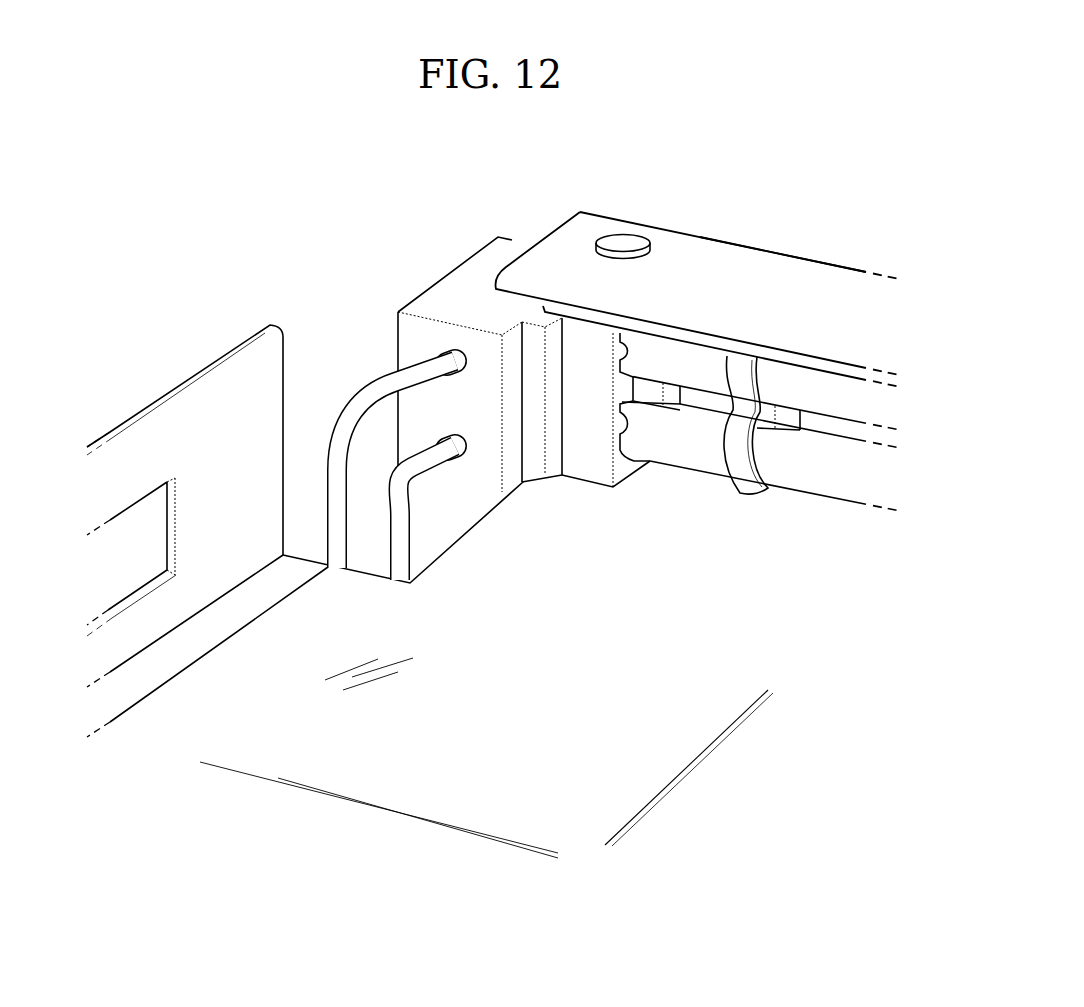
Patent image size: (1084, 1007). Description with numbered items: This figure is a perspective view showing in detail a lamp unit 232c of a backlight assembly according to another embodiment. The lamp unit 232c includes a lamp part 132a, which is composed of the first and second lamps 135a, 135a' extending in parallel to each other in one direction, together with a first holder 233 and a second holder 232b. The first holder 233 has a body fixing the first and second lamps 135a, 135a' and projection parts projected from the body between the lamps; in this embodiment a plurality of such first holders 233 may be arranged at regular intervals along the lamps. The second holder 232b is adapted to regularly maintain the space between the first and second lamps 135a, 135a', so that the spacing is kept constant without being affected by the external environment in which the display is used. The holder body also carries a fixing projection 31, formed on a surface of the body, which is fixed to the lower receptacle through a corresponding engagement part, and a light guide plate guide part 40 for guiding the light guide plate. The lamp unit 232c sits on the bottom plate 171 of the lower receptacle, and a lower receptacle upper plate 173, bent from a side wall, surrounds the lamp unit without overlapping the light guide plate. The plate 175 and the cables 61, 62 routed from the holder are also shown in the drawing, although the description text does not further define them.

The fixing projection 31 is at (622, 247).
The light guide plate guide part 40 is at (537, 345).
The first cable 61 is at (350, 413).
The second cable 62 is at (412, 460).
The bottom plate 171 is at (633, 767).
The lower receptacle upper plate 173 is at (723, 257).
The cover plate 175 is at (664, 265).
The second holder 232b is at (488, 450).
The lamp unit 232c is at (701, 485).
The first holder 233 is at (725, 486).
The first lamp 135a is at (723, 476).
The second lamp 135a' is at (822, 490).
The lamp part 132a is at (760, 497).